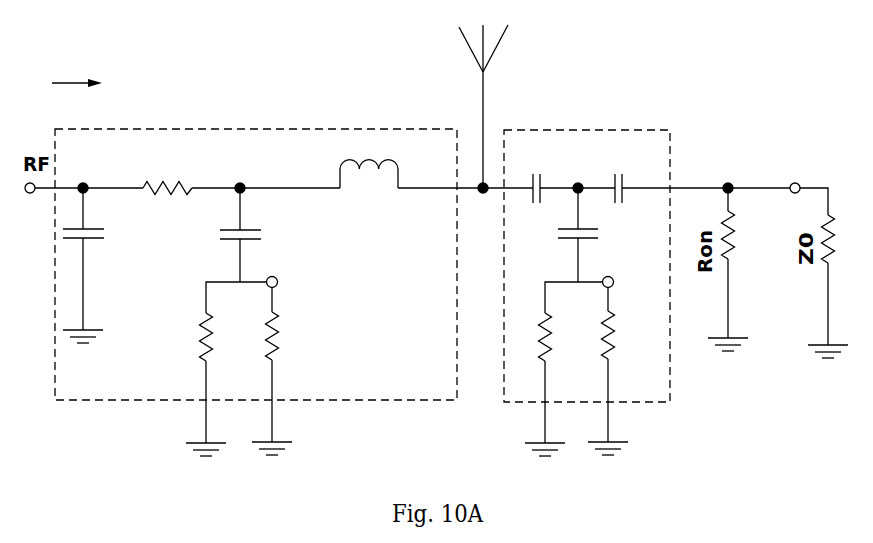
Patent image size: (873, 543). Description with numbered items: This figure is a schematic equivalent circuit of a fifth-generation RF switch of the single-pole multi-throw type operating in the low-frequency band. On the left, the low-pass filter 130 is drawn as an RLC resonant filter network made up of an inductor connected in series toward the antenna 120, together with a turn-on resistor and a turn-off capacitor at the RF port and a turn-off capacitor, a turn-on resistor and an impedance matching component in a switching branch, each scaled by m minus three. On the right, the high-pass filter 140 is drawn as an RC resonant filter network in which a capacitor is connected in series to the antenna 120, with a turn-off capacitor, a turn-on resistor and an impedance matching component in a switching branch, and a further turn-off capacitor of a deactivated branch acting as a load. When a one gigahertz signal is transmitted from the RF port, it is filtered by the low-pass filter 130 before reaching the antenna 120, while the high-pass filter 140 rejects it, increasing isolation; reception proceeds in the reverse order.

The antenna 120 is at (486, 80).
The low-pass filter 130 is at (257, 132).
The high-pass filter 140 is at (588, 132).